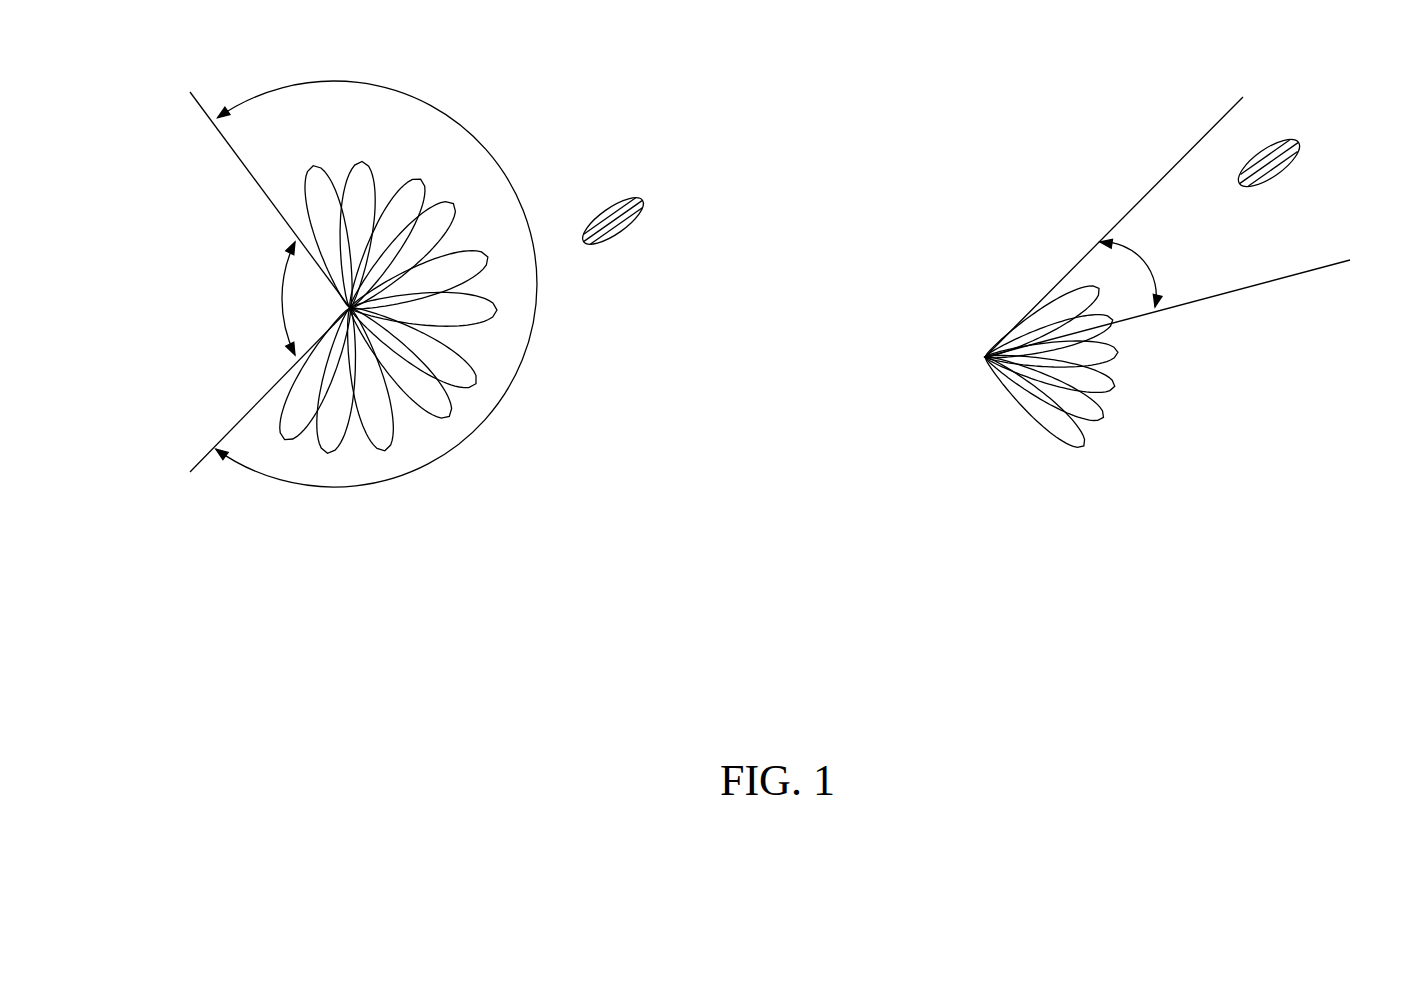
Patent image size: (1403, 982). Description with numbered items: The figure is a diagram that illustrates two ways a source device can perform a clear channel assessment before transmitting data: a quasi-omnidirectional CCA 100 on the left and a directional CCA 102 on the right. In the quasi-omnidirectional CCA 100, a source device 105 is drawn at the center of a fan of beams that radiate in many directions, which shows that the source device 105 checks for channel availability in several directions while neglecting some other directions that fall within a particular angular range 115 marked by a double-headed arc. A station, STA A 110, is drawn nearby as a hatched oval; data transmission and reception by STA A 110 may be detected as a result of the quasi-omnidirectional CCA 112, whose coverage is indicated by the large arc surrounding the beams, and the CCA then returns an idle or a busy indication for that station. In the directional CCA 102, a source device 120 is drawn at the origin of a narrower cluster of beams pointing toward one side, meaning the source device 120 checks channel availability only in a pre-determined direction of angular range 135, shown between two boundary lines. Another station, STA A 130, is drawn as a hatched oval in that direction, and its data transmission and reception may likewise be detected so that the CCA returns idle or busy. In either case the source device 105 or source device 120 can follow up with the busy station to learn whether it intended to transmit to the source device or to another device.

The quasi-omnidirectional CCA 100 is at (472, 78).
The directional CCA 102 is at (962, 158).
The source device 105 is at (345, 304).
The STA A 110 is at (641, 201).
The quasi-omnidirectional CCA 112 is at (500, 394).
The angular range 115 is at (287, 336).
The source device 120 is at (985, 355).
The STA A 130 is at (1289, 142).
The angular range 135 is at (1137, 256).